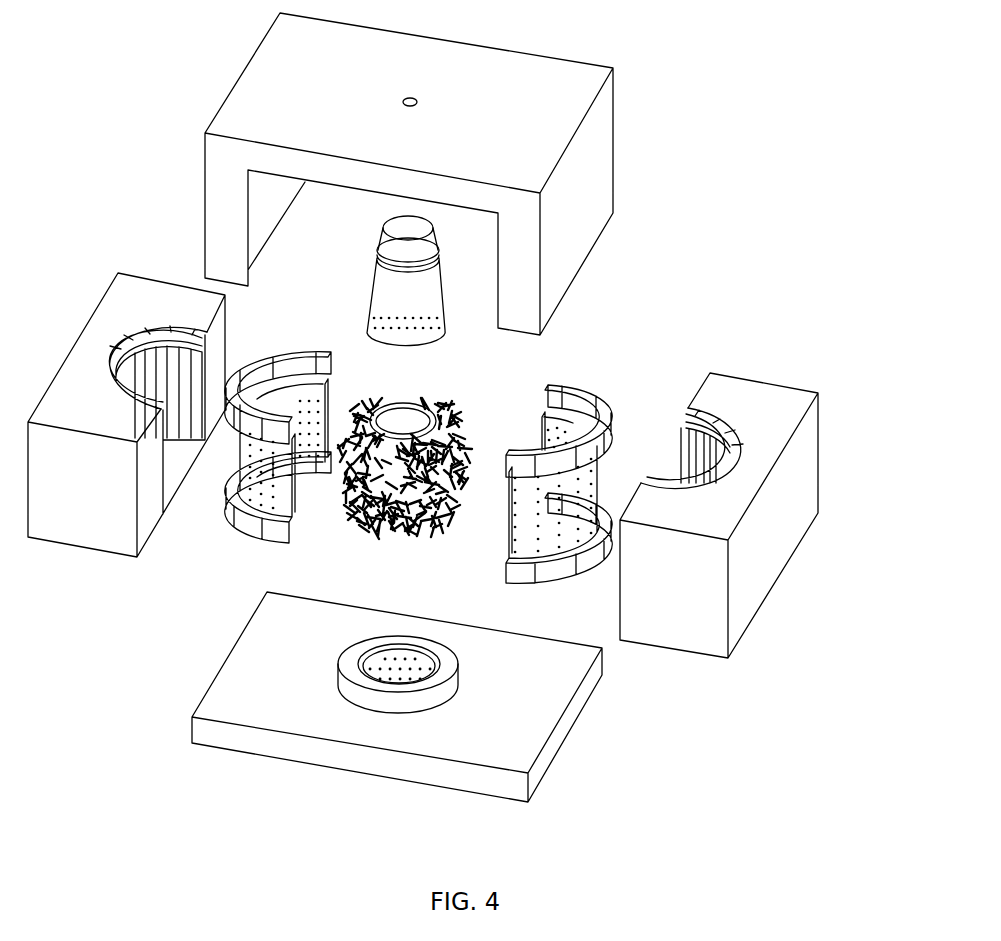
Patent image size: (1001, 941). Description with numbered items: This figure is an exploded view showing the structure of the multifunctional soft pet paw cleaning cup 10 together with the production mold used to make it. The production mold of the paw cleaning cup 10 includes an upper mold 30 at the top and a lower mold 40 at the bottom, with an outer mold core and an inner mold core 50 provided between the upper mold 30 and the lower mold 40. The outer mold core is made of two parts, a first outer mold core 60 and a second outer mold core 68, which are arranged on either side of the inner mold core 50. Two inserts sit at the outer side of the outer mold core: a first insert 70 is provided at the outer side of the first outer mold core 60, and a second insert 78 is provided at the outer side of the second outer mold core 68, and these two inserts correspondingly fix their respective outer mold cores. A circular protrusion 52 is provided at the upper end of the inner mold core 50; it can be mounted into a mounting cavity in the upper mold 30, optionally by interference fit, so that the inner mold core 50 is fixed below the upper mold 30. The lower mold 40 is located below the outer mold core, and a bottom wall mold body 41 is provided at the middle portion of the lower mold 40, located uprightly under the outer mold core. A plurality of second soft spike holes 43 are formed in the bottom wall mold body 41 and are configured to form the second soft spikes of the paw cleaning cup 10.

The paw cleaning cup 10 is at (442, 407).
The upper mold 30 is at (540, 82).
The lower mold 40 is at (520, 705).
The bottom wall mold body 41 is at (324, 644).
The second soft spike holes 43 is at (397, 658).
The inner mold core 50 is at (399, 281).
The circular protrusion 52 is at (420, 243).
The first outer mold core 60 is at (282, 358).
The second outer mold core 68 is at (578, 408).
The first insert 70 is at (172, 302).
The second insert 78 is at (770, 397).